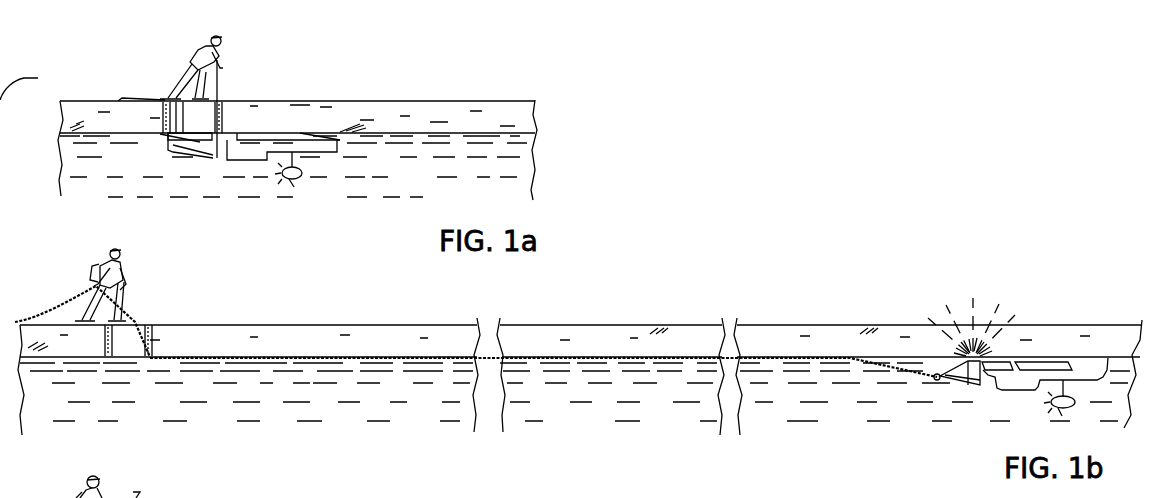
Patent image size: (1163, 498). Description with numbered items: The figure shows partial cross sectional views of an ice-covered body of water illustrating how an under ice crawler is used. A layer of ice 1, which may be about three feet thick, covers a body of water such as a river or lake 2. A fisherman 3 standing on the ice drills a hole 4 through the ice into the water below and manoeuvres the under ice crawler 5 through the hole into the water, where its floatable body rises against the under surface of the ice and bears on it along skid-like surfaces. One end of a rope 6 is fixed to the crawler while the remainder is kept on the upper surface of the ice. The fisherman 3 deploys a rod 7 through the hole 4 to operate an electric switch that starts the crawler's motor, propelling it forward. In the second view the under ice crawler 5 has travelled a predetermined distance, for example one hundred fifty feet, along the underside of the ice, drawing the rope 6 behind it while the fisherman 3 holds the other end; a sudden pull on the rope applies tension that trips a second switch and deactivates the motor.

In FIG. 1A, the layer of ice 1 is at (395, 103).
In FIG. 1B, the layer of ice 1 is at (580, 376).
In FIG. 1A, the body of water 2 is at (293, 166).
In FIG. 1B, the body of water 2 is at (575, 392).
In FIG. 1A, the fisherman 3 is at (170, 60).
In FIG. 1B, the fisherman 3 is at (90, 268).
In FIG. 1A, the hole 4 is at (170, 135).
In FIG. 1A, the under ice crawler 5 is at (335, 152).
In FIG. 1B, the under ice crawler 5 is at (1002, 392).
In FIG. 1A, the rope 6 is at (118, 101).
In FIG. 1B, the rope 6 is at (52, 310).
In FIG. 1A, the rod 7 is at (226, 100).